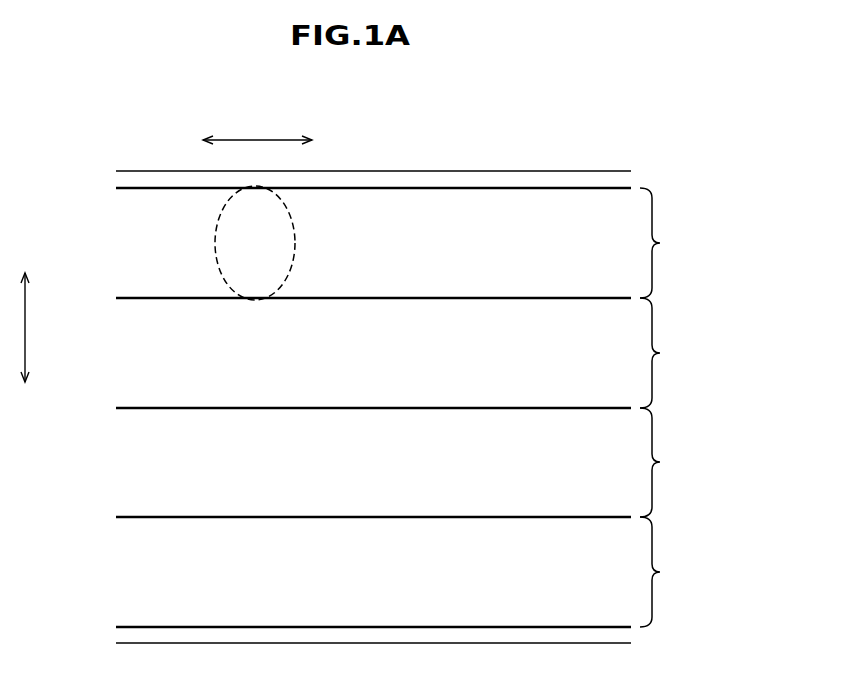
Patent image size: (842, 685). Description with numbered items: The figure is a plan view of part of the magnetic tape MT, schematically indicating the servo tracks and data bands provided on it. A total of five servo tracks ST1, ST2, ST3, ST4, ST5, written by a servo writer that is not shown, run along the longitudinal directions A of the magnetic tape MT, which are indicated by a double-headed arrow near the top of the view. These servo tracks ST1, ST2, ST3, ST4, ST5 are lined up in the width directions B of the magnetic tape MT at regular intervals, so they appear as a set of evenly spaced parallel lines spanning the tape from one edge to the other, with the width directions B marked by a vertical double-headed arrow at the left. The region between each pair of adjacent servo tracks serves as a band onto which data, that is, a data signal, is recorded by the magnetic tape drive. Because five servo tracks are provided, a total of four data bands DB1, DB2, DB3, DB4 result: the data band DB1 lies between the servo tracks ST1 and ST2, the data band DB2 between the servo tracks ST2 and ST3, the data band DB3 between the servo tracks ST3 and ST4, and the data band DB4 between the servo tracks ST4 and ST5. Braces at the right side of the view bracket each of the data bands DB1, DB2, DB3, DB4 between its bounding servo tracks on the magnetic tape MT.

The magnetic tape MT is at (472, 157).
The servo track ST1 is at (344, 196).
The servo track ST2 is at (344, 307).
The servo track ST3 is at (344, 417).
The servo track ST4 is at (344, 526).
The servo track ST5 is at (344, 636).
The data band DB1 is at (674, 243).
The data band DB2 is at (674, 353).
The data band DB3 is at (674, 462).
The data band DB4 is at (674, 572).
The longitudinal directions A is at (257, 126).
The width directions B is at (14, 327).